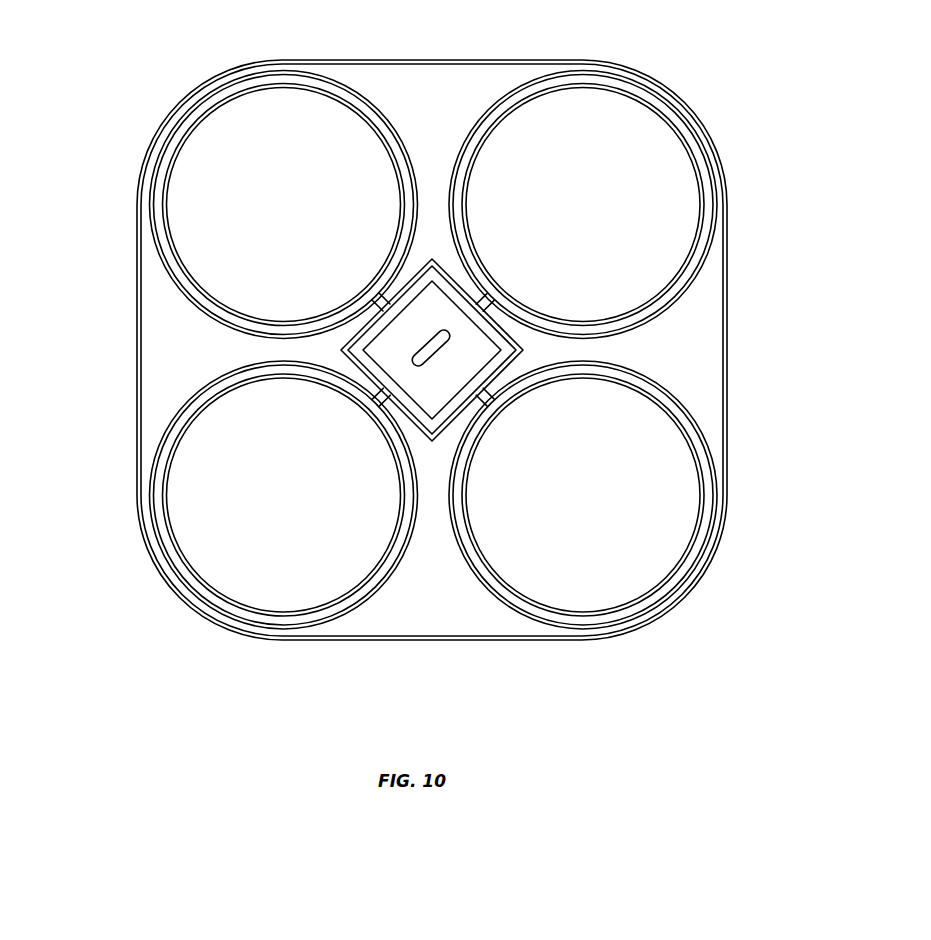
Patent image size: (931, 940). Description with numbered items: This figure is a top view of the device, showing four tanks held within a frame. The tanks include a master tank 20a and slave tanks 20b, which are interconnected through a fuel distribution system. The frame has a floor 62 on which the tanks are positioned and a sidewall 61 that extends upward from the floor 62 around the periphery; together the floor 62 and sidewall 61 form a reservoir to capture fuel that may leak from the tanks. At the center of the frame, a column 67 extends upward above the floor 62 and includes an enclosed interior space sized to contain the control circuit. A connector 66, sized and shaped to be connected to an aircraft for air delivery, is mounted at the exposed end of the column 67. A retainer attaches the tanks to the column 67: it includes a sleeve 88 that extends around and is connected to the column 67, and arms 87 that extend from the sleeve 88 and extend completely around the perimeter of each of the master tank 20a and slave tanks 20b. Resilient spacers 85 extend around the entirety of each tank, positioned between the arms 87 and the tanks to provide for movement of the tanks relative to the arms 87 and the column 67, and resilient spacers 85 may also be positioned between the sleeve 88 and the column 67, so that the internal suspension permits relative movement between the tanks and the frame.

The master tank 20a is at (198, 157).
The slave tank 20b is at (652, 152).
The sidewall 61 is at (728, 428).
The floor 62 is at (697, 382).
The connector 66 is at (430, 347).
The column 67 is at (343, 354).
The resilient spacers 85 is at (650, 88).
The arms 87 is at (356, 90).
The sleeve 88 is at (402, 465).